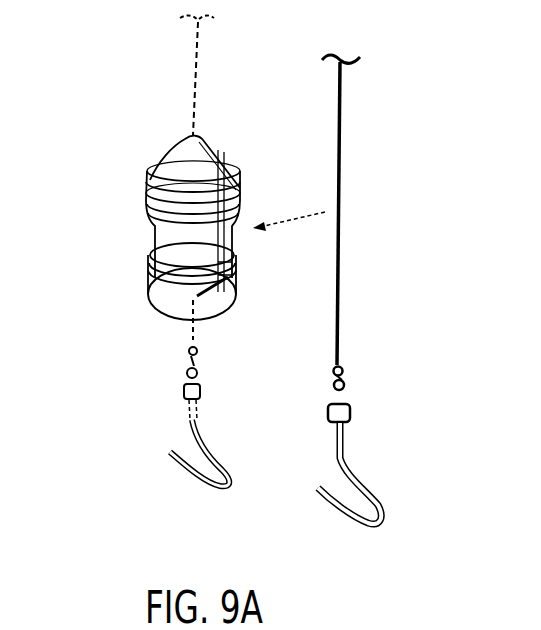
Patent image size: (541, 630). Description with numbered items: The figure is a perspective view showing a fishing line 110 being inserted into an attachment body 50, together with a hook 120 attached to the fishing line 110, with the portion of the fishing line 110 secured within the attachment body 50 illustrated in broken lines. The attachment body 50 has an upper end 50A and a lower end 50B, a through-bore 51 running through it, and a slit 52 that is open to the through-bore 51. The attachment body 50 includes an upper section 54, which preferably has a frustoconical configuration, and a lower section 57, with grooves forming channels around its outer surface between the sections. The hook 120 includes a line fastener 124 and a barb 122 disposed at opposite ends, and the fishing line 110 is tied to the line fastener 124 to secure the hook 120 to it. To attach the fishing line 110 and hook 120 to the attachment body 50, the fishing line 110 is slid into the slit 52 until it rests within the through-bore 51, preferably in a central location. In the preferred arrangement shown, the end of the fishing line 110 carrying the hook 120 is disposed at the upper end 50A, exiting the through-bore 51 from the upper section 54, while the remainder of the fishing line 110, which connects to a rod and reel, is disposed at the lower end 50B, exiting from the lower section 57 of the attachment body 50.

The attachment body 50 is at (97, 330).
The upper end 50A is at (166, 108).
The lower end 50B is at (230, 352).
The through-bore 51 is at (200, 292).
The slit 52 is at (240, 271).
The upper section 54 is at (163, 162).
The lower section 57 is at (160, 300).
The fishing line 110 is at (338, 235).
The hook 120 is at (418, 442).
The barb 122 is at (314, 502).
The line fastener 124 is at (350, 395).